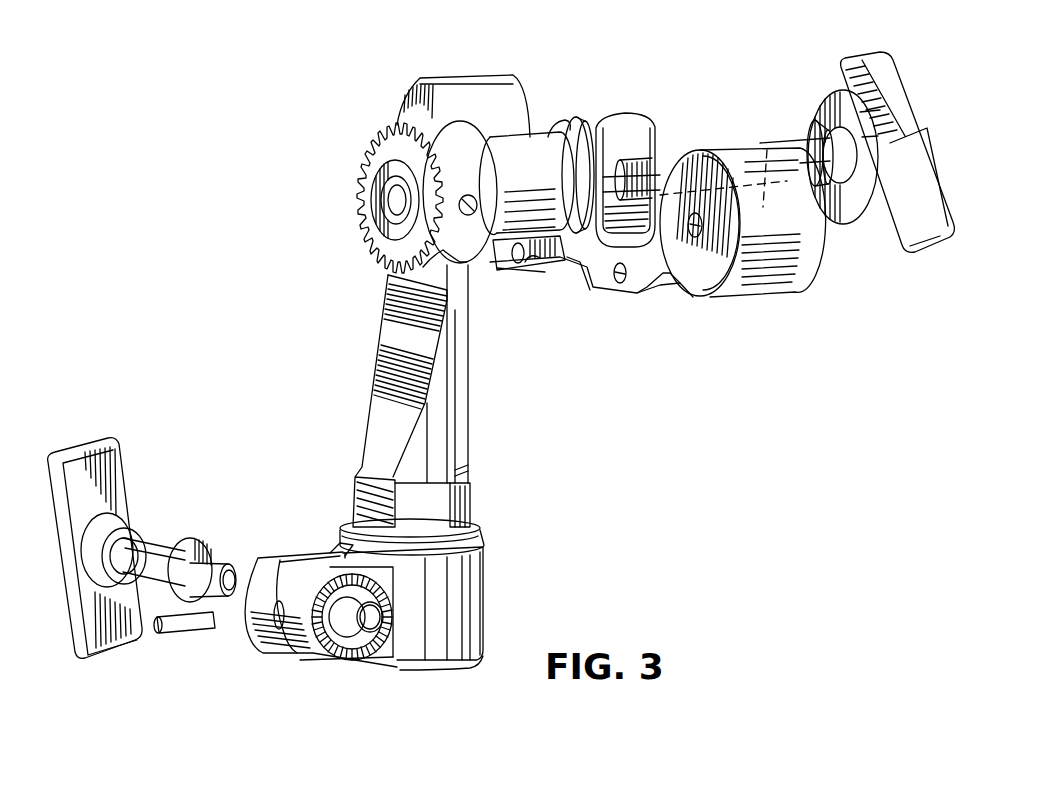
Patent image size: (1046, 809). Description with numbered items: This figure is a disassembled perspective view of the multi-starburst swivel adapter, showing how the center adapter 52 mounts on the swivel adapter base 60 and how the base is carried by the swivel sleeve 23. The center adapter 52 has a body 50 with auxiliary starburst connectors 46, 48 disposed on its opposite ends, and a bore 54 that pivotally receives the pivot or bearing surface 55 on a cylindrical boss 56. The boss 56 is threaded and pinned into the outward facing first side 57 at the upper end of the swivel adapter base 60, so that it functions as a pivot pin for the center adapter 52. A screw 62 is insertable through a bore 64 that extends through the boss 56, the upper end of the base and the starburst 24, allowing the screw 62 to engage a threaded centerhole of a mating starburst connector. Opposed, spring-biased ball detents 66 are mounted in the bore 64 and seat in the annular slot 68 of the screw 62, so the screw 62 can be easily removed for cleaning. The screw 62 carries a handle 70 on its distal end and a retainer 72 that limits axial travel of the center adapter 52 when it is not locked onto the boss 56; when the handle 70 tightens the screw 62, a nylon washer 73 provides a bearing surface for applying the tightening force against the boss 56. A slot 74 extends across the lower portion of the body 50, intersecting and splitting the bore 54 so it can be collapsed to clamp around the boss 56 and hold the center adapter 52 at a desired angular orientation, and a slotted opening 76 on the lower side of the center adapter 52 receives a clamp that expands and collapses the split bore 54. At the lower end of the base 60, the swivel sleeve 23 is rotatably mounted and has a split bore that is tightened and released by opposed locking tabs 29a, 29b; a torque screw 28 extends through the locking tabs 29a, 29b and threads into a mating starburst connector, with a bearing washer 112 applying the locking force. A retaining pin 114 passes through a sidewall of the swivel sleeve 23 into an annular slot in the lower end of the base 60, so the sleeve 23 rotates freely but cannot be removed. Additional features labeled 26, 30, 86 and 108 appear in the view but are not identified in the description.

The swivel sleeve 23 is at (487, 600).
The starburst 24 is at (372, 148).
The arm assembly 26 is at (622, 460).
The torque screw 28 is at (103, 445).
The locking tab 29a is at (305, 562).
The locking tab 29b is at (318, 660).
The clamp plate 30 is at (395, 585).
The auxiliary starburst connector 46 is at (768, 293).
The auxiliary starburst connector 48 is at (472, 80).
The body 50 is at (632, 295).
The center adapter 52 is at (652, 124).
The bore 54 is at (580, 150).
The bearing surface 55 is at (528, 143).
The cylindrical boss 56 is at (563, 145).
The first side 57 is at (465, 392).
The swivel adapter base 60 is at (368, 408).
The screw 62 is at (665, 158).
The bore 64 is at (396, 211).
The ball detents 66 is at (390, 195).
The annular slot 68 is at (727, 192).
The handle 70 is at (858, 56).
The retainer 72 is at (828, 88).
The nylon washer 73 is at (810, 135).
The slot 74 is at (555, 268).
The slotted opening 76 is at (588, 280).
The pin 86 is at (520, 272).
The gear 108 is at (297, 652).
The bearing washer 112 is at (205, 550).
The retaining pin 114 is at (183, 635).